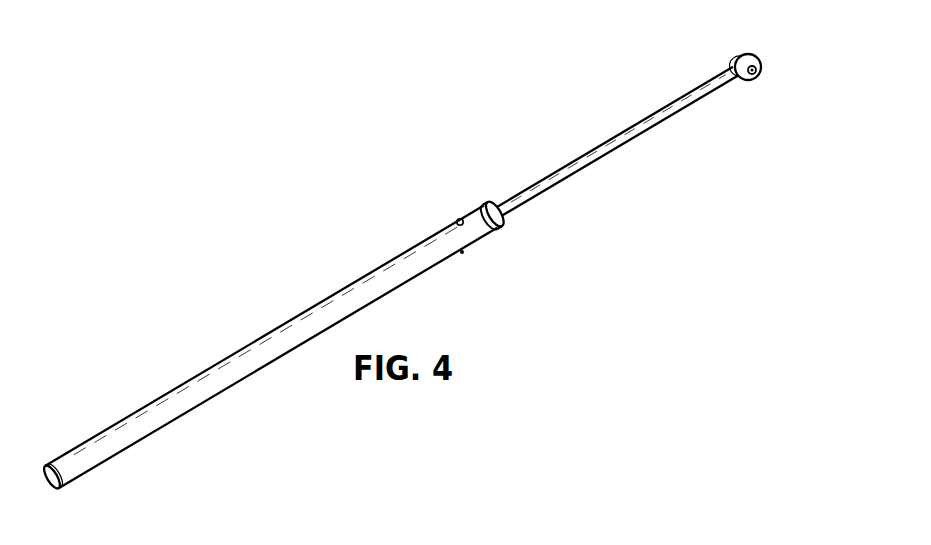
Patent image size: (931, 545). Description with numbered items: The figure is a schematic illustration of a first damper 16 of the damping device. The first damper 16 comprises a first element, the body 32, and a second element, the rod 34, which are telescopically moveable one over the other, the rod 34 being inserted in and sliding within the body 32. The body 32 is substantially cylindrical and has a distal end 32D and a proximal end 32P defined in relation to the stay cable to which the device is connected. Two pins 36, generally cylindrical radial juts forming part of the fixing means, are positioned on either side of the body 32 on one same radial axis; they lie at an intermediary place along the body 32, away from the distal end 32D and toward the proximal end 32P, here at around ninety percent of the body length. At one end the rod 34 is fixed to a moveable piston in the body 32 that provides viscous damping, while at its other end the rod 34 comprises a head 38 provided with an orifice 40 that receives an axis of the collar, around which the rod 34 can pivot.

The first damper 16 is at (303, 240).
The first element (body) 32 is at (224, 358).
The distal end 32D is at (55, 465).
The proximal end 32P is at (488, 204).
The second element (rod) 34 is at (623, 133).
The pins 36 is at (456, 219).
The head 38 is at (740, 54).
The orifice 40 is at (757, 78).